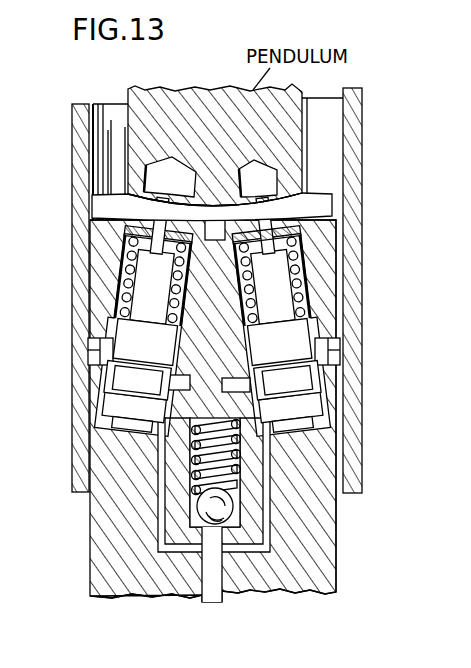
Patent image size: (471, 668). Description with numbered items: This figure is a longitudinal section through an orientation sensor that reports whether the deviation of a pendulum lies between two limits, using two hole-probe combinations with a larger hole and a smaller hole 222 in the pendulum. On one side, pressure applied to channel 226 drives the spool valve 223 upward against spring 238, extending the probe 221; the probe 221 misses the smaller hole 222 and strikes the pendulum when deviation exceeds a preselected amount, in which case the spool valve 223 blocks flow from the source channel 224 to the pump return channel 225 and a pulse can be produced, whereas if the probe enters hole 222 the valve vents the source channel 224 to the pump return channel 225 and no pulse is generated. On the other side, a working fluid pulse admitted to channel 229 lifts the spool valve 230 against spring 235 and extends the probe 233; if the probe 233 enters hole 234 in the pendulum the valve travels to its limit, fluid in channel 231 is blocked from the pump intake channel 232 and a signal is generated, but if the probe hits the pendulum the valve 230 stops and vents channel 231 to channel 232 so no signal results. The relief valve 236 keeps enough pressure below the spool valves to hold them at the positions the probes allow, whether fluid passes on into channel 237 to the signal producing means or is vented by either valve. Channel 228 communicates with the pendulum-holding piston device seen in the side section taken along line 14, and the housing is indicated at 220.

The section line 14 is at (215, 110).
The housing 220 is at (340, 238).
The probe 221 is at (300, 198).
The smaller hole 222 is at (272, 178).
The spool valve 223 is at (330, 333).
The source channel 224 is at (250, 384).
The pump return channel 225 is at (340, 372).
The channel 226 is at (266, 452).
The channel 228 is at (209, 587).
The channel 229 is at (163, 510).
The spool valve 230 is at (133, 400).
The channel 231 is at (125, 362).
The pump intake channel 232 is at (118, 347).
The probe 233 is at (158, 207).
The hole 234 is at (148, 165).
The spring 235 is at (128, 262).
The relief valve 236 is at (230, 508).
The channel 237 is at (334, 208).
The spring 238 is at (306, 262).